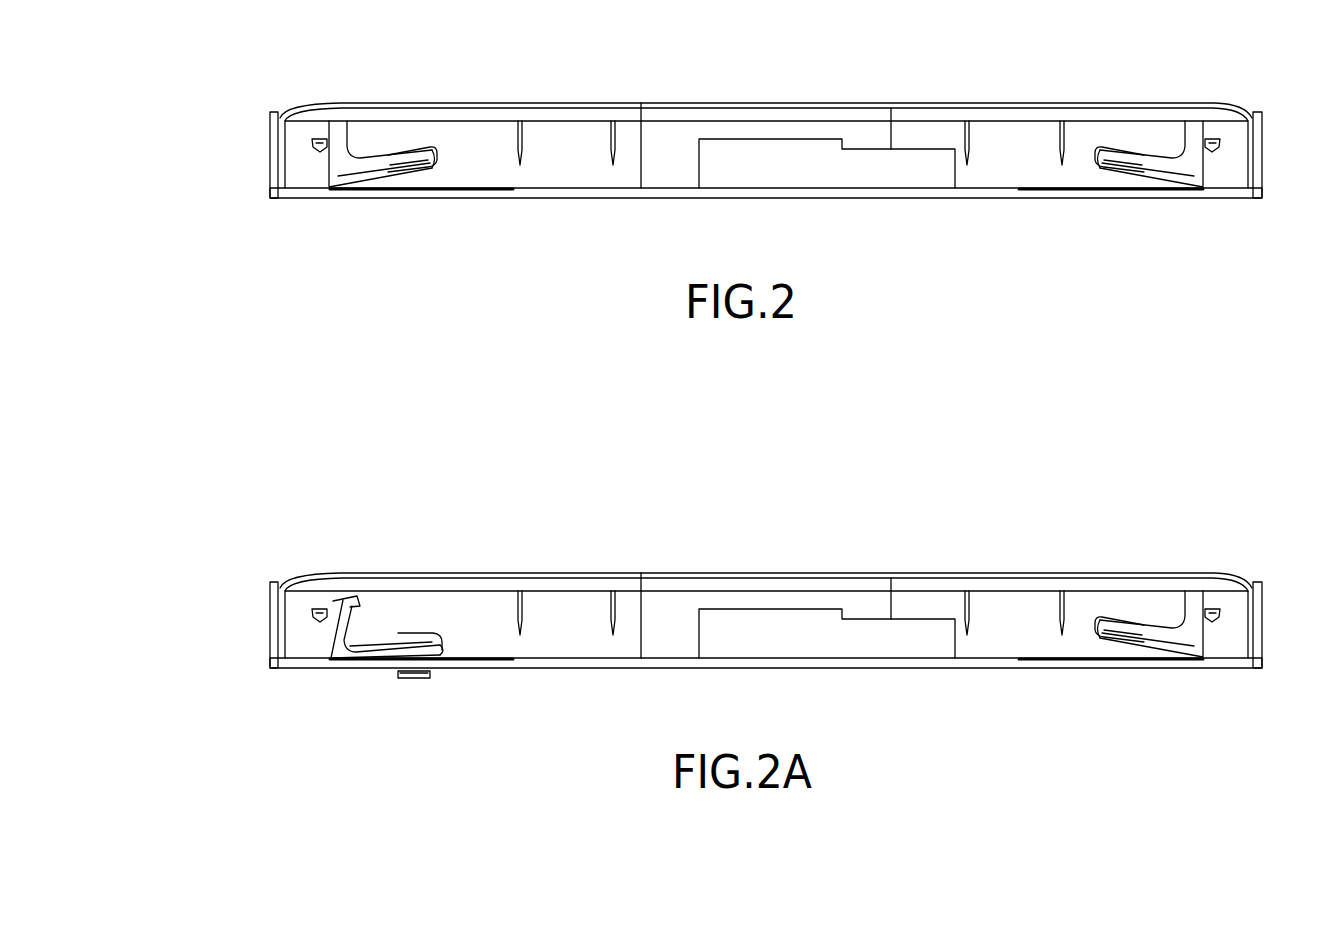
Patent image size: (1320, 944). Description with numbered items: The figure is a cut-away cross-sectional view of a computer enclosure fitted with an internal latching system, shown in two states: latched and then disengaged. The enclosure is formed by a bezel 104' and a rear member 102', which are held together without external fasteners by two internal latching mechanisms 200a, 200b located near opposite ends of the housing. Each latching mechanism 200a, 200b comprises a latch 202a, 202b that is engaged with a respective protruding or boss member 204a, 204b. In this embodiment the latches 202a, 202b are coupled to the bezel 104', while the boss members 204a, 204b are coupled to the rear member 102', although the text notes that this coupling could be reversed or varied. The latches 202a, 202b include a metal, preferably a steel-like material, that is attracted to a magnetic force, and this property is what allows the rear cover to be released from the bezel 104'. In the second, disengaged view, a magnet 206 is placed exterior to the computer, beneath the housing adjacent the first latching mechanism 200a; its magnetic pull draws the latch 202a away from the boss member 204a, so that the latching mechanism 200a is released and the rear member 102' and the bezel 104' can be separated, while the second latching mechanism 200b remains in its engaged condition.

In FIG. 2, the rear member 102' is at (766, 86).
In FIG. 2A, the rear member 102' is at (766, 556).
In FIG. 2, the bezel 104' is at (716, 150).
In FIG. 2A, the bezel 104' is at (716, 620).
In FIG. 2, the latching mechanism 200a is at (475, 220).
In FIG. 2A, the latching mechanism 200a is at (372, 743).
In FIG. 2, the latching mechanism 200b is at (1262, 220).
In FIG. 2A, the latching mechanism 200b is at (1162, 722).
In FIG. 2, the latch 202a is at (347, 137).
In FIG. 2A, the latch 202a is at (387, 589).
In FIG. 2, the latch 202b is at (1185, 137).
In FIG. 2A, the latch 202b is at (1149, 589).
In FIG. 2, the protruding member 204a is at (318, 139).
In FIG. 2A, the protruding member 204a is at (308, 571).
In FIG. 2, the protruding member 204b is at (1214, 139).
In FIG. 2A, the protruding member 204b is at (1229, 571).
In FIG. 2A, the magnet 206 is at (382, 692).